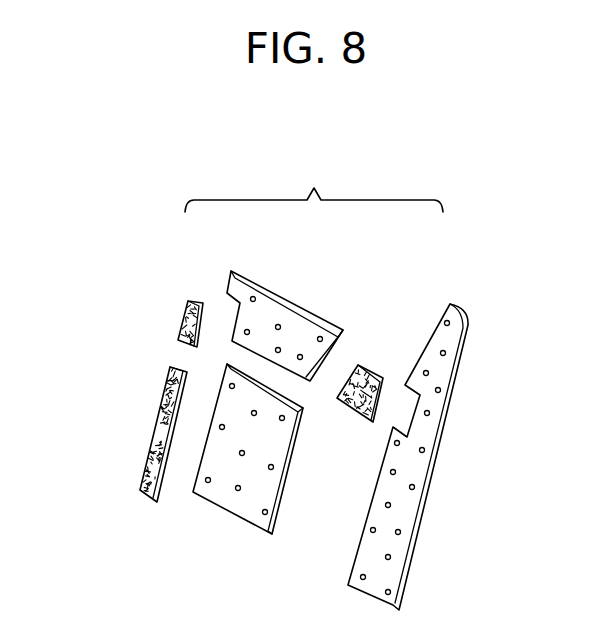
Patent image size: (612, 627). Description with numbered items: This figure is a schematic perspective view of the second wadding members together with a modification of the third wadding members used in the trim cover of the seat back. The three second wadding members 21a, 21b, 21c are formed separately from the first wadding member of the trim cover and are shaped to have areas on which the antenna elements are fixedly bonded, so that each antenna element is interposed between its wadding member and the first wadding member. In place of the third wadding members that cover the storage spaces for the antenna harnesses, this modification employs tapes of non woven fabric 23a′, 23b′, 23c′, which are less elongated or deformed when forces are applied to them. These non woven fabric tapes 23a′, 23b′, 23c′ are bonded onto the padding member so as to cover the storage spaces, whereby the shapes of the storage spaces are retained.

The second wadding member 21a is at (291, 293).
The second wadding member 21b is at (237, 503).
The second wadding member 21c is at (470, 332).
The non woven fabric tape 23a′ is at (183, 313).
The non woven fabric tape 23b′ is at (158, 413).
The non woven fabric tape 23c′ is at (373, 365).